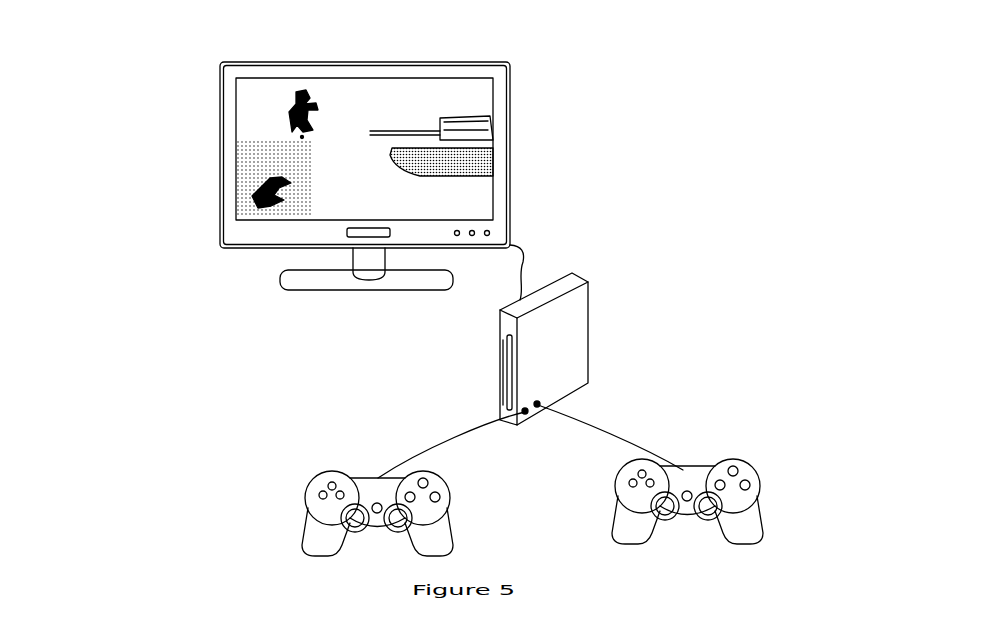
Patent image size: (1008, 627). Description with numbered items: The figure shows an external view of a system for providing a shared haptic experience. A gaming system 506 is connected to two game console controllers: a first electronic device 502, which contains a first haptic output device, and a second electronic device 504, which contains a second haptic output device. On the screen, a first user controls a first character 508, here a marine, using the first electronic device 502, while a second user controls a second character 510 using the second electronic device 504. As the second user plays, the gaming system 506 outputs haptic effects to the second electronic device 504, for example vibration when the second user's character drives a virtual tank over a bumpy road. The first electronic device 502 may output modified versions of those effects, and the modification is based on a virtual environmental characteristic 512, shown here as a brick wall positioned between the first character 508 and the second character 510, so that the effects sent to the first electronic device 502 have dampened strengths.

The first electronic device 502 is at (292, 537).
The second electronic device 504 is at (848, 459).
The gaming system 506 is at (561, 343).
The first character 508 is at (488, 48).
The second character 510 is at (420, 336).
The environmental characteristic 512 is at (248, 160).